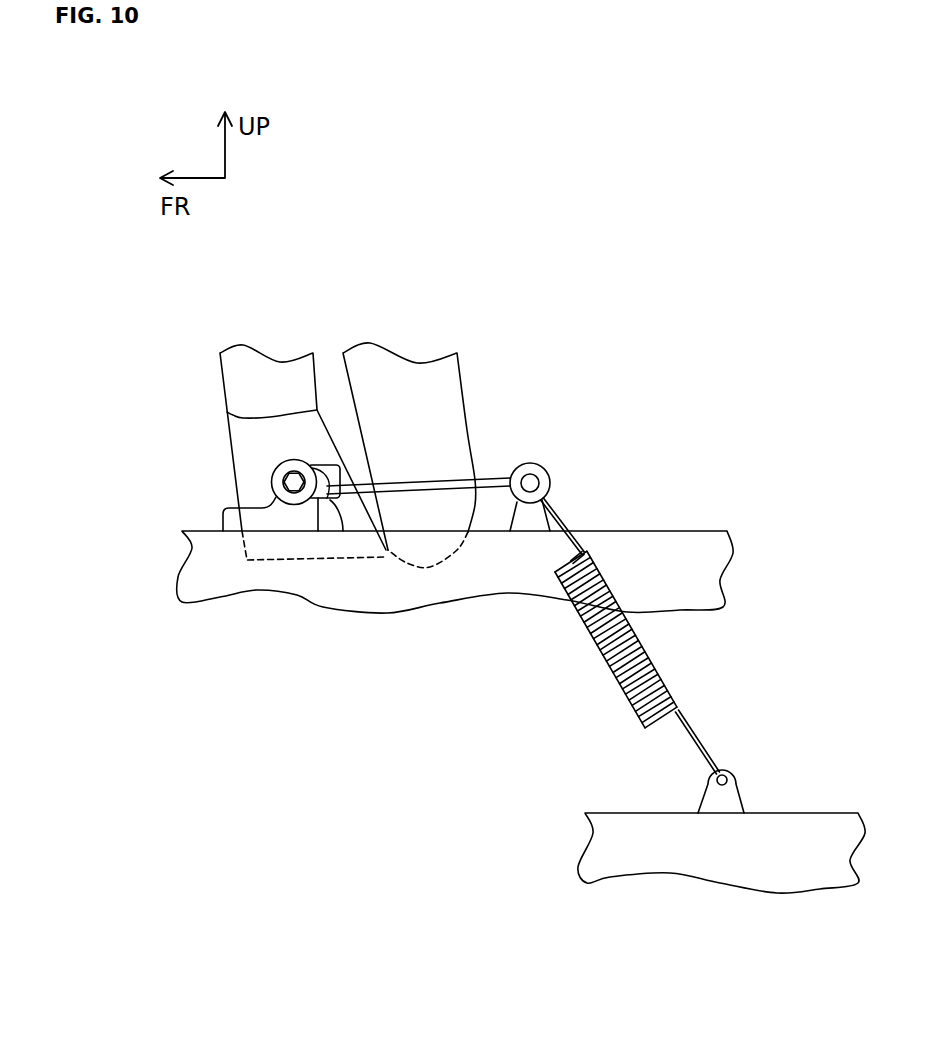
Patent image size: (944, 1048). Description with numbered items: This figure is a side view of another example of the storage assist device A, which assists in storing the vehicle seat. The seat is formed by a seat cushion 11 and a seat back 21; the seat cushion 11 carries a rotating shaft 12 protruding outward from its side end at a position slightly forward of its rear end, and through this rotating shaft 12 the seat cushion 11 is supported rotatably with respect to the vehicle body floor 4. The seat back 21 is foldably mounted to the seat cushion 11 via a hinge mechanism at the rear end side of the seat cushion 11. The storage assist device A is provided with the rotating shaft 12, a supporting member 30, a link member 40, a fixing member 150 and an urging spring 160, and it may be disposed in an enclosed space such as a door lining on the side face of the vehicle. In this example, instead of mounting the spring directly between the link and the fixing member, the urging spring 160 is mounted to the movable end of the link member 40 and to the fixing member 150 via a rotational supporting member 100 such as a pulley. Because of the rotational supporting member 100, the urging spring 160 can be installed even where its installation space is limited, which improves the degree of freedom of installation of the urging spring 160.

The vehicle body floor 4 is at (197, 528).
The seat cushion 11 is at (265, 363).
The seat back 21 is at (427, 330).
The rotating shaft 12 is at (283, 475).
The supporting member 30 is at (265, 522).
The link member 40 is at (340, 503).
The rotational supporting member 100 is at (528, 467).
The urging spring 160 is at (650, 650).
The fixing member 150 is at (732, 793).
The storage assist device A is at (686, 405).